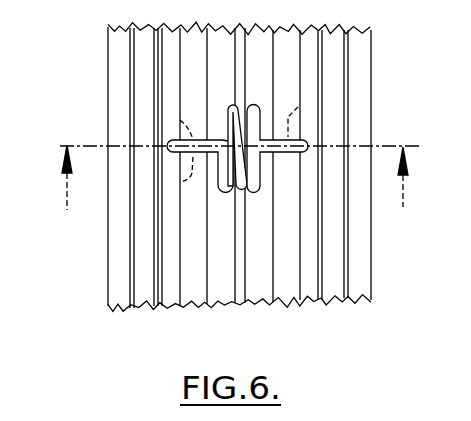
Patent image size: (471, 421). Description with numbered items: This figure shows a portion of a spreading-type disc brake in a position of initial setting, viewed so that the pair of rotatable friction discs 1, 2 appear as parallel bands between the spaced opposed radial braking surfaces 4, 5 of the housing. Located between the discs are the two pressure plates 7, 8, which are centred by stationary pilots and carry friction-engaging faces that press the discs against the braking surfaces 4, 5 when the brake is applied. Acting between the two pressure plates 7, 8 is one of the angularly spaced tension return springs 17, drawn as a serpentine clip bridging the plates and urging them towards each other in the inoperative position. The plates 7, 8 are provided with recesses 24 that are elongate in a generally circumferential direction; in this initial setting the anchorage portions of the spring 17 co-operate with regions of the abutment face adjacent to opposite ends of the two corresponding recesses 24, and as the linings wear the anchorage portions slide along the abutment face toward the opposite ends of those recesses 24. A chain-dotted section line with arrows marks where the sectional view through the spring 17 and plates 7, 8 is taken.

The rotatable friction disc 1 is at (145, 56).
The rotatable friction disc 2 is at (332, 83).
The radial braking surface 4 is at (128, 240).
The radial braking surface 5 is at (348, 256).
The pressure plate 7 is at (176, 343).
The pressure plate 8 is at (287, 272).
The tension return spring 17 is at (229, 113).
The recess 24 is at (182, 137).